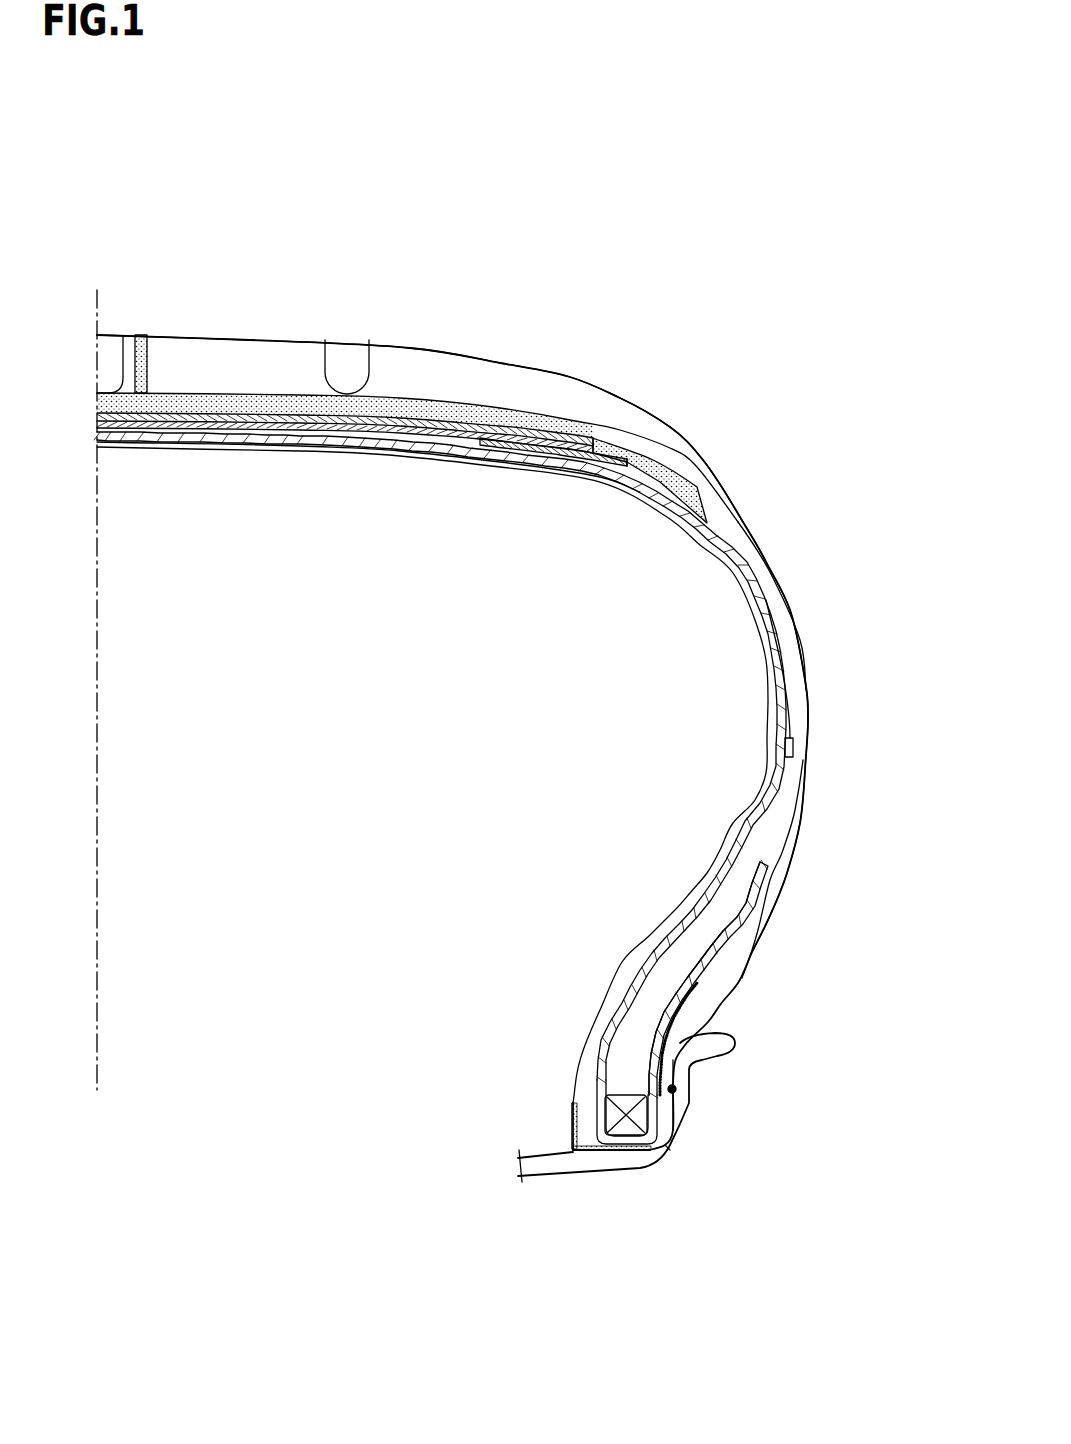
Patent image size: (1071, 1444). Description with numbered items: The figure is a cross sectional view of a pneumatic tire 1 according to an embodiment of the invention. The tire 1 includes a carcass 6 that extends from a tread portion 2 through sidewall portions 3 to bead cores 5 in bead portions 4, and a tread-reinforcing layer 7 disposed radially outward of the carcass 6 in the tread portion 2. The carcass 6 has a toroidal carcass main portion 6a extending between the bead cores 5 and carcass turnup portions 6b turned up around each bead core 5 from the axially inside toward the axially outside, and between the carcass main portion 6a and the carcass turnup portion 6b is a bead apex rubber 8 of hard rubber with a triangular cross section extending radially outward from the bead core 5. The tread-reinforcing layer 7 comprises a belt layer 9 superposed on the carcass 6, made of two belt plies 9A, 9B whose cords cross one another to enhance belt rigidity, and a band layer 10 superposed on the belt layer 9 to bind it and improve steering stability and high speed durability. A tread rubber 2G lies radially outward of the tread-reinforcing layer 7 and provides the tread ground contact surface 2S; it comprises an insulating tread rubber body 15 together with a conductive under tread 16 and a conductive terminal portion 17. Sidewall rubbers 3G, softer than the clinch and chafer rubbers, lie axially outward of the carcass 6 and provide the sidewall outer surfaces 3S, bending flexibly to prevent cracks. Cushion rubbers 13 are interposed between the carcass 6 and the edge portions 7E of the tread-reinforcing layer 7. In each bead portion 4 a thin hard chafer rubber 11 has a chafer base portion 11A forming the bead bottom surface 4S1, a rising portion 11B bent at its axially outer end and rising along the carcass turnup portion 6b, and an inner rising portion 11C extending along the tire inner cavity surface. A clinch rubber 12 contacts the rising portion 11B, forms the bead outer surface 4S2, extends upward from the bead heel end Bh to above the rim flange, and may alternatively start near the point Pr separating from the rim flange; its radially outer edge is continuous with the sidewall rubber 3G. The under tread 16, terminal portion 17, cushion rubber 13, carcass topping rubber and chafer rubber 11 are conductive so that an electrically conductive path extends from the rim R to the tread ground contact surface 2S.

The pneumatic tire 1 is at (744, 349).
The tread portion 2 is at (508, 427).
The tread rubber 2G is at (270, 357).
The tread ground contact surface 2S is at (450, 350).
The sidewall portion 3 is at (834, 719).
The sidewall rubber 3G is at (793, 675).
The sidewall outer surface 3S is at (805, 722).
The bead portion 4 is at (667, 1173).
The bead bottom surface 4S1 is at (585, 1157).
The bead outer surface 4S2 is at (695, 1055).
The bead core 5 is at (674, 1156).
The carcass 6 is at (445, 788).
The carcass main portion 6a is at (768, 719).
The carcass turnup portion 6b is at (779, 782).
The tread-reinforcing layer 7 is at (398, 486).
The edge portion of the tread-reinforcing layer 7E is at (636, 452).
The bead apex rubber 8 is at (650, 995).
The belt layer 9 is at (345, 505).
The belt ply 9A is at (308, 425).
The belt ply 9B is at (375, 418).
The band layer 10 is at (198, 407).
The chafer rubber 11 is at (615, 1163).
The chafer base portion 11A is at (628, 1142).
The rising portion 11B is at (657, 1110).
The inner rising portion 11C is at (574, 1107).
The clinch rubber 12 is at (713, 990).
The cushion rubber 13 is at (638, 468).
The tread rubber body 15 is at (307, 367).
The under tread 16 is at (213, 393).
The terminal portion 17 is at (148, 347).
The point separating from the rim flange Pr is at (672, 1089).
The bead heel end Bh is at (662, 1157).
The rim R is at (543, 1167).